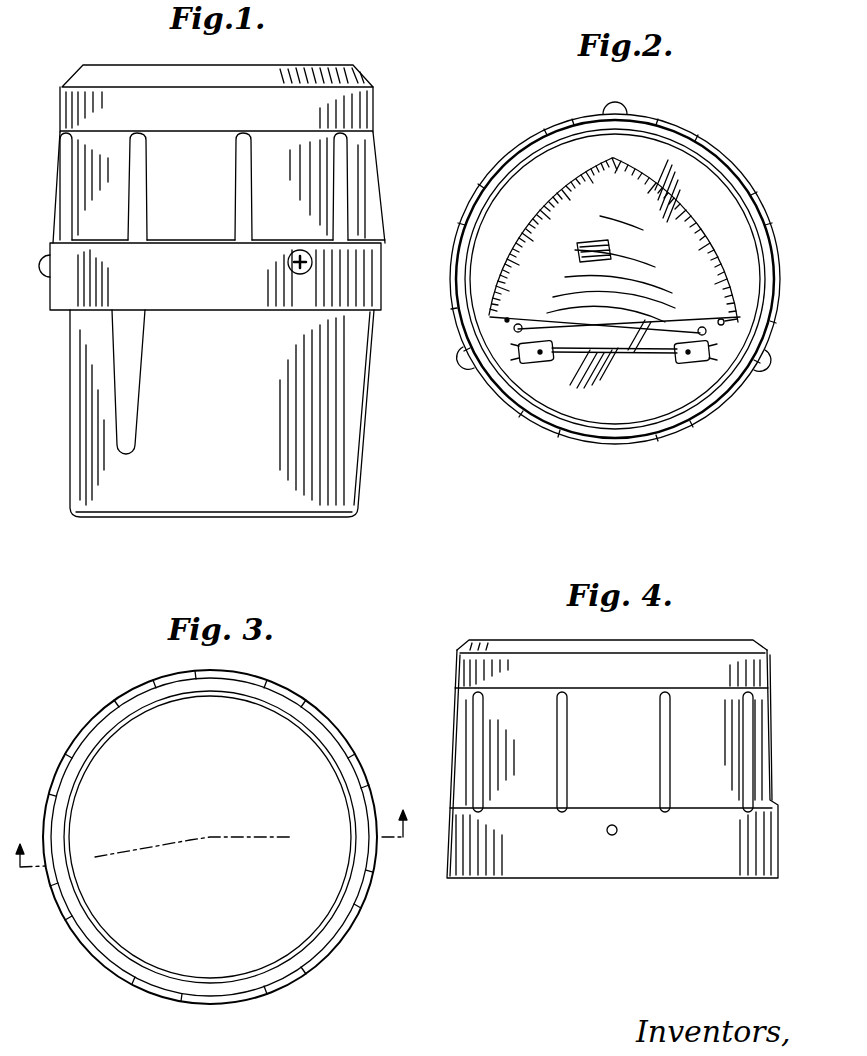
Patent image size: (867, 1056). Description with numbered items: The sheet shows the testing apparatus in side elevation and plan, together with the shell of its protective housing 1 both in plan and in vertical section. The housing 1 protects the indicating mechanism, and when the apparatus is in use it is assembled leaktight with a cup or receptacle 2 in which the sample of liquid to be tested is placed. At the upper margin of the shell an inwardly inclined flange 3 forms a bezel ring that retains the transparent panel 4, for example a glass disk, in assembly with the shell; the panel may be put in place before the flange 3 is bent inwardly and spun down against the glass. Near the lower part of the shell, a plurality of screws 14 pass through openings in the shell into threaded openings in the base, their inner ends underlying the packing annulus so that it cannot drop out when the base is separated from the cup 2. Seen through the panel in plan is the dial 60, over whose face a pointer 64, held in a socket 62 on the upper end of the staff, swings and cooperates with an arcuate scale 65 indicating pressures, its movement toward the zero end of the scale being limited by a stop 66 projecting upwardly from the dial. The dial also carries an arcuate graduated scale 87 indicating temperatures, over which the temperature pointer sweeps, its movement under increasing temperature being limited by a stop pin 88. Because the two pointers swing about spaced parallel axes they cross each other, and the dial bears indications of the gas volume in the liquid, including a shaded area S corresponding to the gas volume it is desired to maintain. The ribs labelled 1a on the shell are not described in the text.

In FIG. 1, the protective housing 1 is at (378, 108).
In FIG. 4, the protective housing 1 is at (770, 705).
In FIG. 3, the ribs 1a is at (268, 686).
In FIG. 4, the ribs 1a is at (458, 752).
In FIG. 1, the cup or receptacle 2 is at (386, 413).
In FIG. 4, the inwardly inclined flange 3 is at (758, 648).
In FIG. 1, the transparent panel 4 is at (276, 72).
In FIG. 3, the transparent panel 4 is at (208, 852).
In FIG. 1, the screws 14 is at (43, 260).
In FIG. 2, the screws 14 is at (617, 102).
In FIG. 2, the shaded area S is at (575, 249).
In FIG. 2, the dial 60 is at (683, 232).
In FIG. 2, the socket 62 is at (693, 357).
In FIG. 2, the pointer 64 is at (647, 352).
In FIG. 2, the arcuate scale 65 is at (518, 267).
In FIG. 2, the stop 66 is at (515, 330).
In FIG. 2, the graduated scale 87 is at (770, 236).
In FIG. 2, the stop pin 88 is at (710, 325).